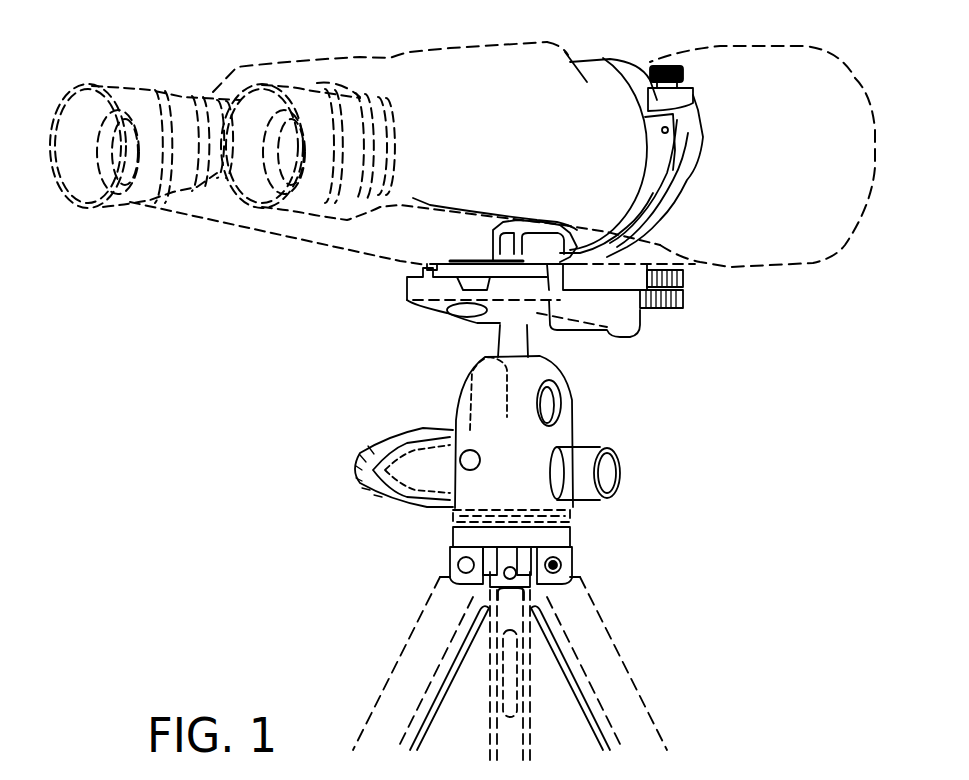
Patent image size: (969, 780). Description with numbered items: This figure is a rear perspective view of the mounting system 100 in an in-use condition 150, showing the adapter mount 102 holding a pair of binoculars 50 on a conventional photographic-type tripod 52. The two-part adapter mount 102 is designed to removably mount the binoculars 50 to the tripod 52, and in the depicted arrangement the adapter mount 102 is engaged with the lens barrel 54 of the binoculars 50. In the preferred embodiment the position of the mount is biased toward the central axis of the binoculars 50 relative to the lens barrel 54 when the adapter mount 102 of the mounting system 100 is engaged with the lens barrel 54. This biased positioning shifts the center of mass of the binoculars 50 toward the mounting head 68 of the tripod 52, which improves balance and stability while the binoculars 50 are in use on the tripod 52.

The binoculars 50 is at (248, 222).
The lens barrel 54 is at (457, 50).
The adapter mount 102 is at (620, 56).
The mounting system 100 is at (677, 218).
The mounting head 68 is at (637, 317).
The in-use condition 150 is at (318, 298).
The tripod 52 is at (407, 507).